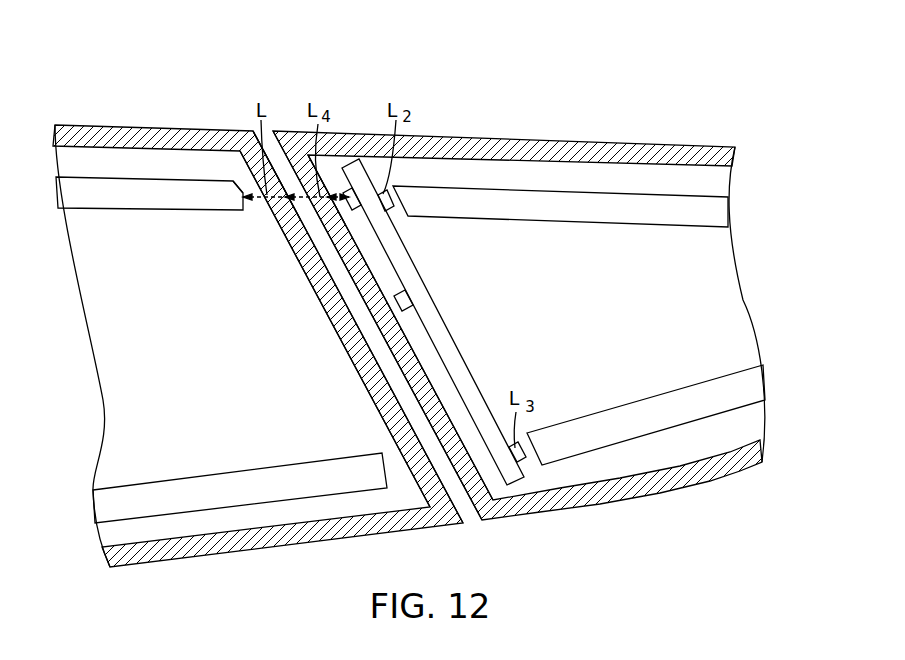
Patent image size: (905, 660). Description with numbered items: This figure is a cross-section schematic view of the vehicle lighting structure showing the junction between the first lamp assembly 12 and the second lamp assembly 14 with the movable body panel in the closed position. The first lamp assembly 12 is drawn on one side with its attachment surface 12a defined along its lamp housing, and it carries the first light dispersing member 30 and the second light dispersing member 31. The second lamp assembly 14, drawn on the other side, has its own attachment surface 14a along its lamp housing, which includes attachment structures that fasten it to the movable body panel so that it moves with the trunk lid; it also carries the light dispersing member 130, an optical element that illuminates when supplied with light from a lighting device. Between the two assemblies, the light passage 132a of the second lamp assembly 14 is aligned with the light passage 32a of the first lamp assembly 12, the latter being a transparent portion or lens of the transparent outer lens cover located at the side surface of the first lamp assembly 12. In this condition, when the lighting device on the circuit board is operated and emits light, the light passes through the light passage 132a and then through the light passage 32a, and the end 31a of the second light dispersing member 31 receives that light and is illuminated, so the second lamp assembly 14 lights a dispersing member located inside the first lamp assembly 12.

The first lamp assembly 12 is at (168, 124).
The attachment surface 12a is at (388, 385).
The second lamp assembly 14 is at (546, 138).
The attachment surface 14a is at (422, 408).
The first light dispersing member 30 is at (190, 497).
The second light dispersing member 31 is at (121, 193).
The end 31a is at (239, 192).
The light passage 32a is at (278, 202).
The light dispersing member 130 is at (648, 216).
The light passage 132a is at (327, 207).